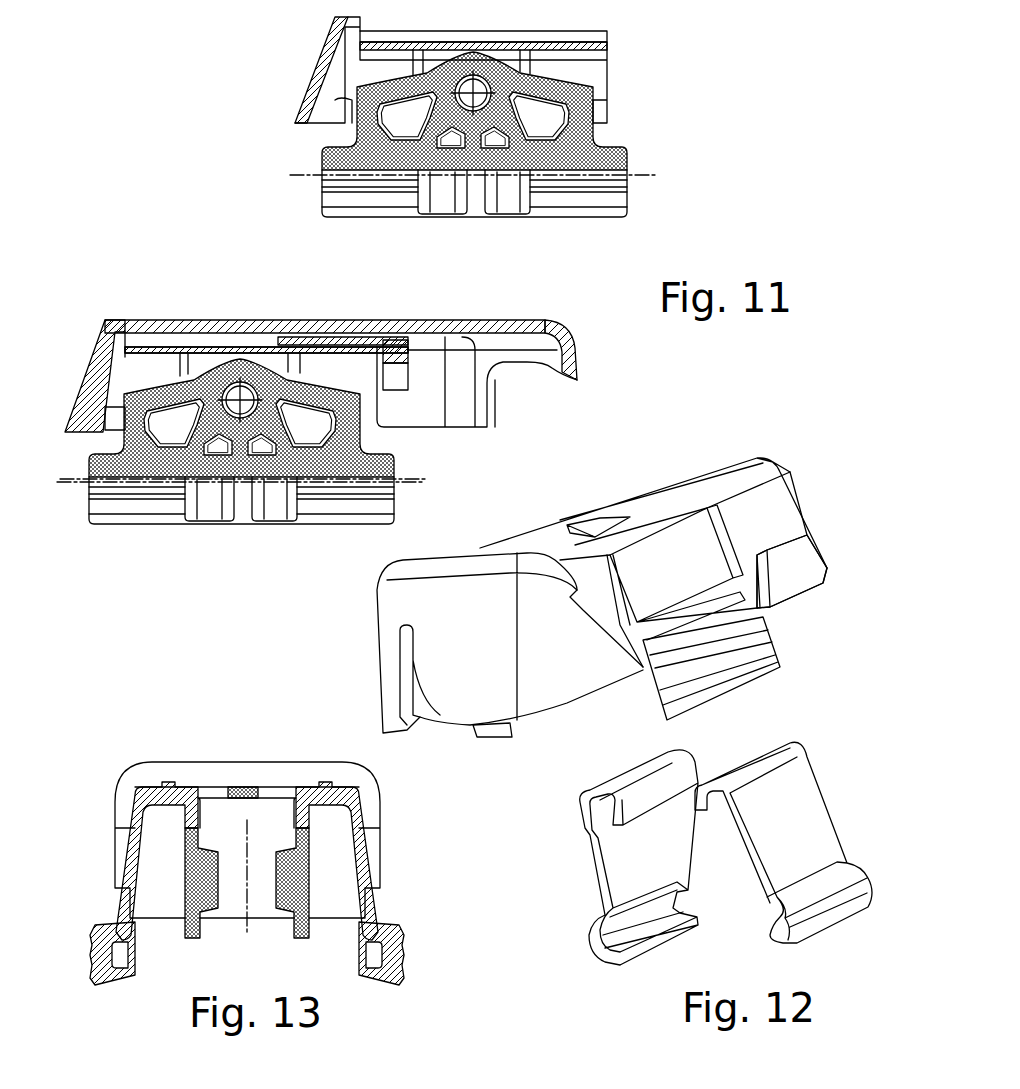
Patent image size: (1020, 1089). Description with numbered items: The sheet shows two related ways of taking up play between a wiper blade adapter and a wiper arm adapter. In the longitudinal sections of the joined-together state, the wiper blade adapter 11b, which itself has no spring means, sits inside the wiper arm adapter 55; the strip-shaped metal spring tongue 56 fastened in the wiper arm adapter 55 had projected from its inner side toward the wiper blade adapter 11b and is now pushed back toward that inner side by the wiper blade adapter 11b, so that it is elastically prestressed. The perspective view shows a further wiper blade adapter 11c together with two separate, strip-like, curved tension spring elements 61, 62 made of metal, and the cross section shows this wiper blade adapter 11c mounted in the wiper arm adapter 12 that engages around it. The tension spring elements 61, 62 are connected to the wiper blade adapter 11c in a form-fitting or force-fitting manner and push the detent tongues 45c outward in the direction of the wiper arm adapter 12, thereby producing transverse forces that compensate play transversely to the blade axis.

In FIG. 11, the wiper blade adapter 11b is at (618, 142).
In FIG. 12, the wiper blade adapter 11c is at (817, 530).
In FIG. 13, the wiper blade adapter 11c is at (227, 920).
In FIG. 13, the wiper arm adapter 12 is at (373, 815).
In FIG. 12, the detent tongues 45c is at (663, 560).
In FIG. 13, the detent tongues 45c is at (92, 937).
In FIG. 11, the wiper arm adapter 55 is at (342, 320).
In FIG. 11, the spring tongue 56 is at (305, 330).
In FIG. 12, the tension spring element 61 is at (800, 815).
In FIG. 13, the tension spring element 61 is at (347, 908).
In FIG. 12, the tension spring element 62 is at (617, 860).
In FIG. 13, the tension spring element 62 is at (147, 908).